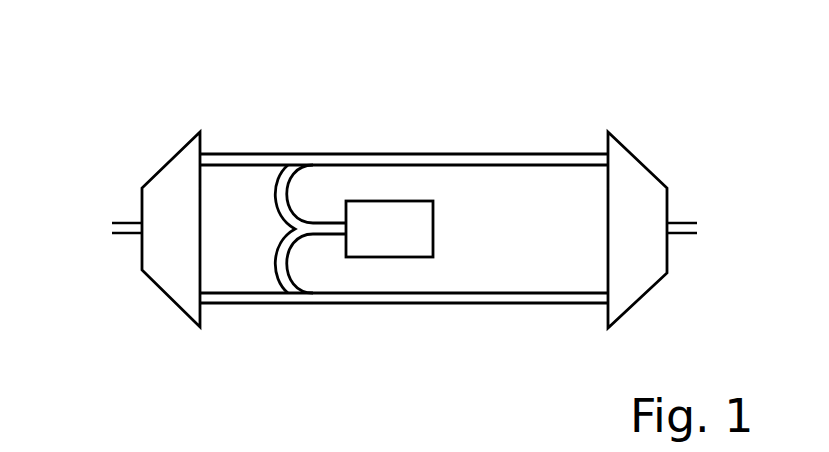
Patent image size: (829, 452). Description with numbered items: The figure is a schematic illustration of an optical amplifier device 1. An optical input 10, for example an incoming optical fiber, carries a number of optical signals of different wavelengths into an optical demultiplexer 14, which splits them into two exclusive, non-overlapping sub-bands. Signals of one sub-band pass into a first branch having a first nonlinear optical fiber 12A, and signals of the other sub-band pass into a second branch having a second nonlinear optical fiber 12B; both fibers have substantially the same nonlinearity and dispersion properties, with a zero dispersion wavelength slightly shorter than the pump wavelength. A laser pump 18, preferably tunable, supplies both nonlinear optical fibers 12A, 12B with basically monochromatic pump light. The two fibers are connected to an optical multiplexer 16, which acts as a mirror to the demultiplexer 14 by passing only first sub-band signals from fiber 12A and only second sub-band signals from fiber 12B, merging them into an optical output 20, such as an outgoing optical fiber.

The optical amplifier device 1 is at (196, 100).
The optical input 10 is at (134, 222).
The first nonlinear optical fiber 12A is at (520, 163).
The second nonlinear optical fiber 12B is at (425, 298).
The optical demultiplexer 14 is at (182, 293).
The optical multiplexer 16 is at (632, 290).
The laser pump 18 is at (425, 216).
The optical output 20 is at (687, 223).